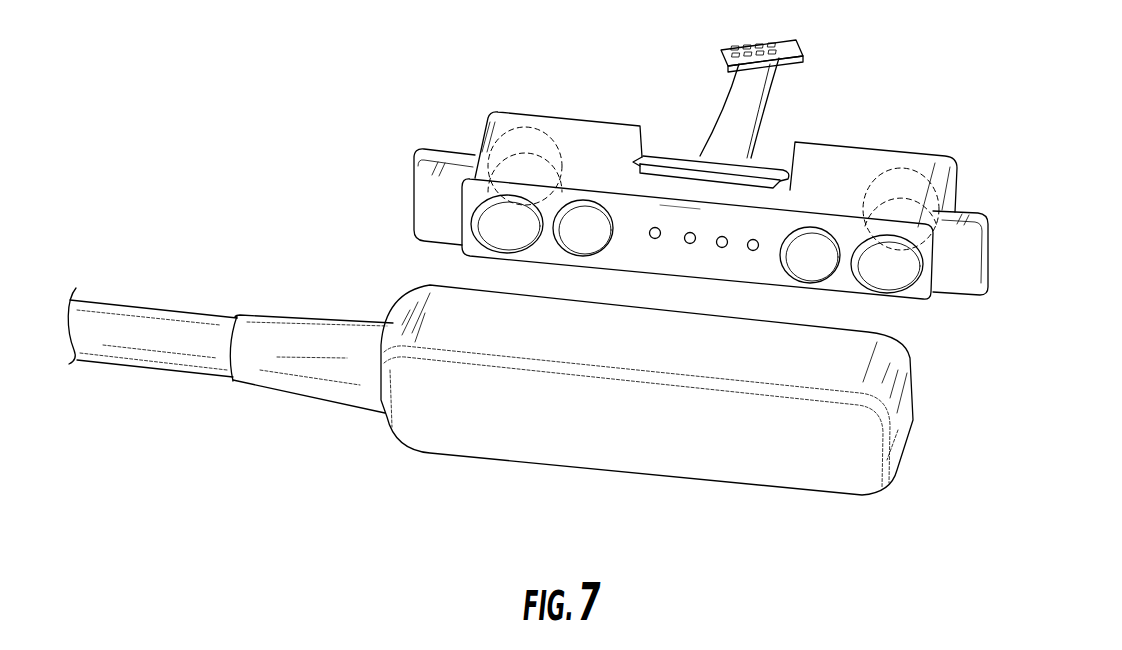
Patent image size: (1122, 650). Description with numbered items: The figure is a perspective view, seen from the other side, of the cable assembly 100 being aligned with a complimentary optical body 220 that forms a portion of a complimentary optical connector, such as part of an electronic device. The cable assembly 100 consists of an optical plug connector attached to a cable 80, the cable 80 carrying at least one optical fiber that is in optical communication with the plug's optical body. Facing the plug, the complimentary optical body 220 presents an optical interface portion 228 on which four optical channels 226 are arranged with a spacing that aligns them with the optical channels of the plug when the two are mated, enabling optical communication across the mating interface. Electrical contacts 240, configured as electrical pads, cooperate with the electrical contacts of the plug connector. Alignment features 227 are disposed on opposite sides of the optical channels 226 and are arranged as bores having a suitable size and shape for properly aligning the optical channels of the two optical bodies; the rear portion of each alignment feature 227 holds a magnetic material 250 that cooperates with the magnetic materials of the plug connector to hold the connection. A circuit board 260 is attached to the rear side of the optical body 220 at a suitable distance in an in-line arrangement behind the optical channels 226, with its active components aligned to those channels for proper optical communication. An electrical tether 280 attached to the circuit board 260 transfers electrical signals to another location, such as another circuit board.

The cable 80 is at (158, 362).
The cable assembly 100 is at (901, 492).
The complimentary optical body 220 is at (983, 115).
The optical channels 226 is at (657, 238).
The alignment features 227 is at (495, 227).
The optical interface portion 228 is at (668, 215).
The electrical contacts 240 is at (583, 227).
The magnetic material 250 is at (518, 137).
The circuit board 260 is at (766, 154).
The electrical tether 280 is at (778, 88).